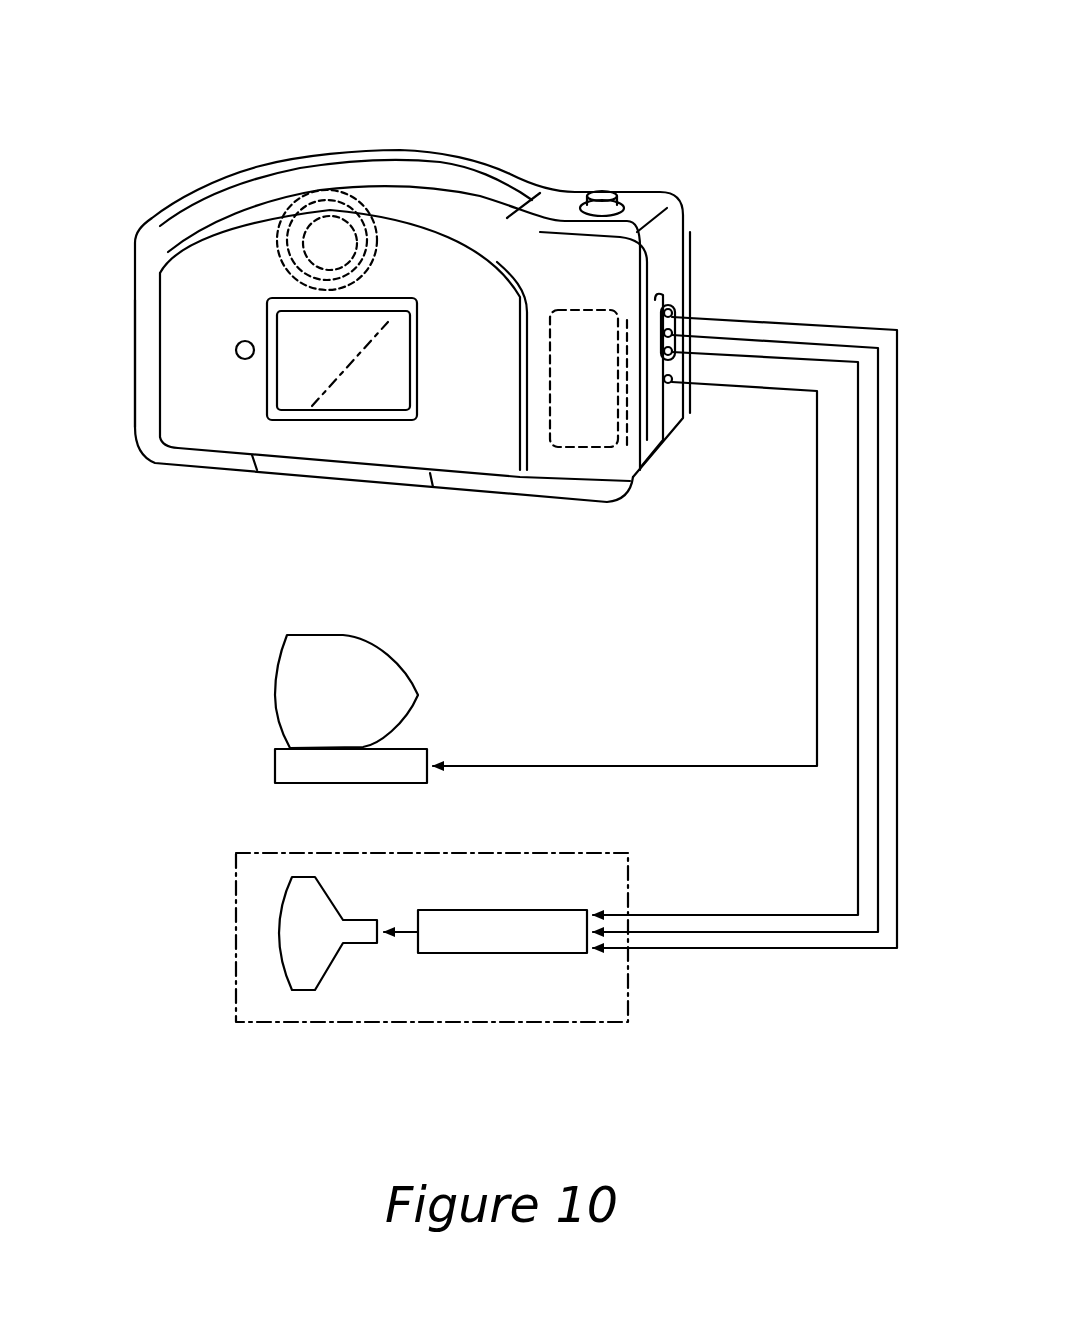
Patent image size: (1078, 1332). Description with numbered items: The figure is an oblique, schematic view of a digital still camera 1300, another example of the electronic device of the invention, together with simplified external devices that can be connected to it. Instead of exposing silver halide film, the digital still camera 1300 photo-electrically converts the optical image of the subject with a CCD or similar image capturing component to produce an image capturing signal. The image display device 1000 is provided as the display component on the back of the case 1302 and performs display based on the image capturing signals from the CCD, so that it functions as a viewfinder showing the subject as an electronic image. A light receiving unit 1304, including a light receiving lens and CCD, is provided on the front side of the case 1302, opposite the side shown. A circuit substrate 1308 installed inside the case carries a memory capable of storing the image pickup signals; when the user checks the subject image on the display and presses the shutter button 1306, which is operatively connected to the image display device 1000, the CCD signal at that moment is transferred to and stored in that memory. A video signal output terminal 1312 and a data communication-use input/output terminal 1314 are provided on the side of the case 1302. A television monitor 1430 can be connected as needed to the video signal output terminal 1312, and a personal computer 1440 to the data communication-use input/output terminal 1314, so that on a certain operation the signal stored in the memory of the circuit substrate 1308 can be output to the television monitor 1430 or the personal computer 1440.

The digital still camera 1300 is at (503, 97).
The case 1302 is at (150, 271).
The light receiving unit 1304 is at (366, 192).
The shutter button 1306 is at (598, 190).
The circuit substrate 1308 is at (583, 425).
The video signal output terminal 1312 is at (687, 302).
The data communication-use input/output terminal 1314 is at (667, 384).
The image display device 1000 is at (372, 388).
The personal computer 1440 is at (282, 653).
The television monitor 1430 is at (236, 918).